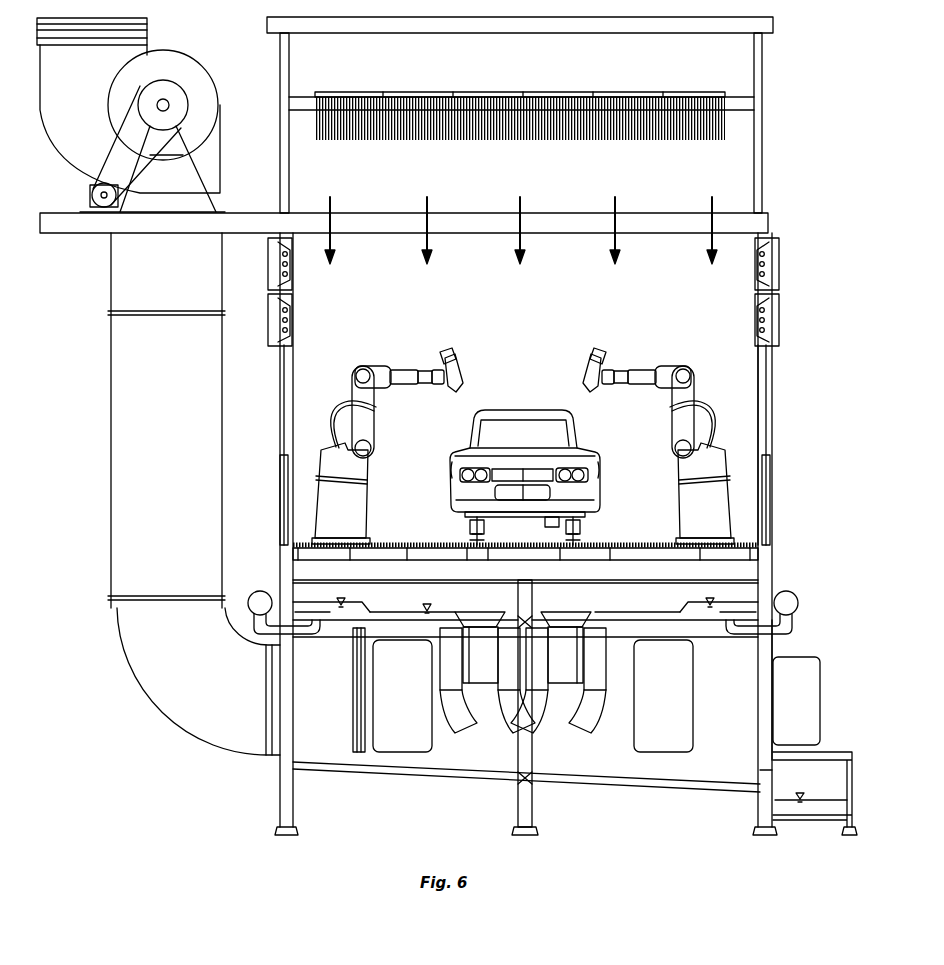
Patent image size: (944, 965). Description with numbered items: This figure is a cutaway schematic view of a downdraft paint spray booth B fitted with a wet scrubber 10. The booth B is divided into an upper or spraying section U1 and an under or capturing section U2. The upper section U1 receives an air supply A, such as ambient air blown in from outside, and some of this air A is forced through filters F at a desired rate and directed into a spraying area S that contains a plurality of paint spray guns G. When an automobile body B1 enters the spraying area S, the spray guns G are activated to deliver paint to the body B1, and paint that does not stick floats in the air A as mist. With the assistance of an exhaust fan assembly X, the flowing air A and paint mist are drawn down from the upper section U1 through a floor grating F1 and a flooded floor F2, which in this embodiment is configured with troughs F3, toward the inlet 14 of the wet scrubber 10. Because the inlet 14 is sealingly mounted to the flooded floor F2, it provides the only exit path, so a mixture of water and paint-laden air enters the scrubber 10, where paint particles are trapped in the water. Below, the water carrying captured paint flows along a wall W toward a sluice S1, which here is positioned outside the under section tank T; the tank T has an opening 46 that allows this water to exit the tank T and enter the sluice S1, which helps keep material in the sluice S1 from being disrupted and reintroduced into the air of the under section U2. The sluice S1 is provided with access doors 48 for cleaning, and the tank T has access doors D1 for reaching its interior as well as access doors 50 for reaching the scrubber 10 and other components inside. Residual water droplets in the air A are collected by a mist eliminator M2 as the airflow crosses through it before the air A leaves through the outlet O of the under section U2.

The exhaust fan assembly X is at (212, 72).
The paint spray booth B is at (826, 58).
The filters F is at (384, 140).
The air supply A is at (521, 221).
The spraying area S is at (571, 285).
The paint spray guns G is at (580, 370).
The automobile body B1 is at (525, 477).
The upper or spraying section U1 is at (775, 385).
The troughs F3 is at (336, 599).
The flooded floor F2 is at (420, 618).
The floor grating F1 is at (630, 552).
The inlet 14 is at (486, 610).
The wet scrubber 10 is at (476, 692).
The access doors D1 is at (533, 696).
The under section tank T is at (525, 654).
The mist eliminator M2 is at (355, 738).
The outlet O is at (299, 693).
The under or capturing section U2 is at (779, 653).
The access doors 50 is at (796, 701).
The access doors 48 is at (817, 756).
The opening 46 is at (765, 772).
The sluice S1 is at (770, 806).
The wall W is at (554, 781).